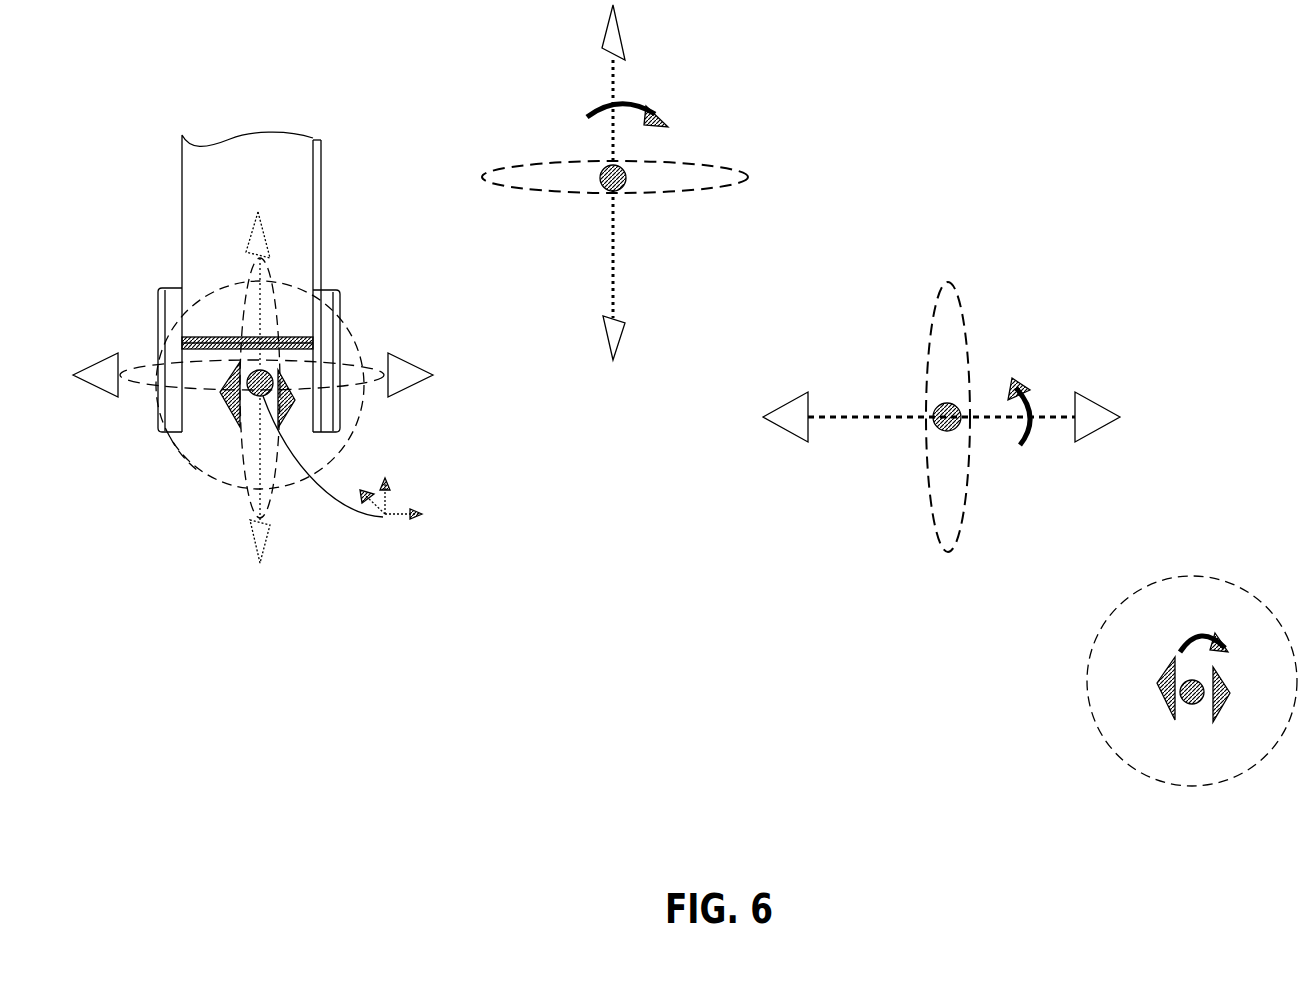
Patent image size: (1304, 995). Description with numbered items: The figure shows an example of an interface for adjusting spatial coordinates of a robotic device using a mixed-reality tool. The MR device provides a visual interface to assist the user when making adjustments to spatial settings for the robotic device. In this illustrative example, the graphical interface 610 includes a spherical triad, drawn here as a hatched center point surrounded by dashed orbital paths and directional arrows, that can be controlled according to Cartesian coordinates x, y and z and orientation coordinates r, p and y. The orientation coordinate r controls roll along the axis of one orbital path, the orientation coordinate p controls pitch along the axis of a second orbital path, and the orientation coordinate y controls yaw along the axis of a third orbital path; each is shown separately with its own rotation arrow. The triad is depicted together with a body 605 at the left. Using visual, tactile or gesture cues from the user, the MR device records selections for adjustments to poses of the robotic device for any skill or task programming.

The housing 605 is at (182, 228).
The graphical interface 610 is at (225, 550).